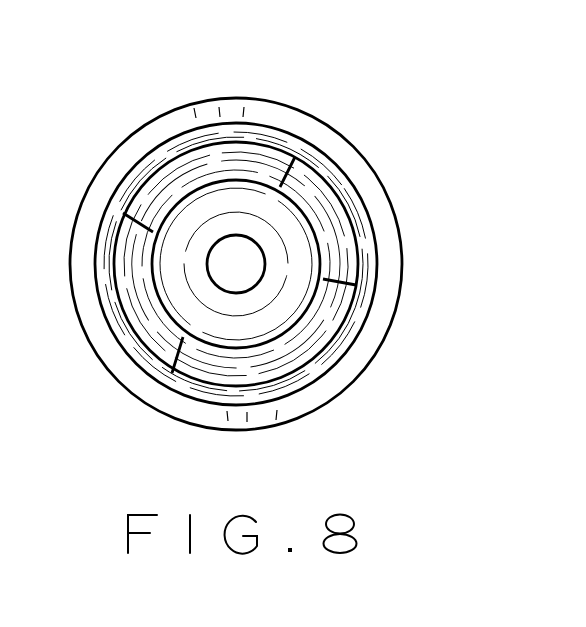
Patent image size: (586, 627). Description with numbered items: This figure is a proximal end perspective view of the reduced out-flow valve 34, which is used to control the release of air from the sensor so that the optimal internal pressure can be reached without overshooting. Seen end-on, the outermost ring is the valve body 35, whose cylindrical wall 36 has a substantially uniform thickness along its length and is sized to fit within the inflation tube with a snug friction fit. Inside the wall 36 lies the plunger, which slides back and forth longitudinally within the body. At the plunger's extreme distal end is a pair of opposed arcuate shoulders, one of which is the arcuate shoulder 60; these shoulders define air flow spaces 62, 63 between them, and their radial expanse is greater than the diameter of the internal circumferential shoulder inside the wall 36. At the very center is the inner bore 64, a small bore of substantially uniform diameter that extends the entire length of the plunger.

The reduced out-flow valve 34 is at (382, 146).
The valve body 35 is at (385, 286).
The cylindrical wall 36 is at (188, 119).
The arcuate shoulder 60 is at (223, 150).
The air flow space 62 is at (340, 243).
The air flow space 63 is at (148, 328).
The inner bore 64 is at (238, 273).